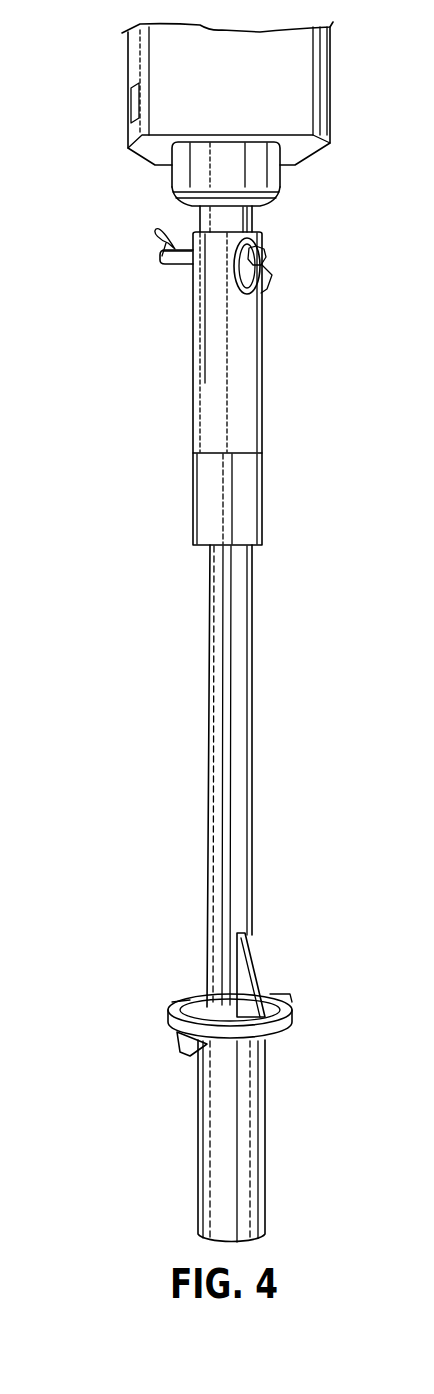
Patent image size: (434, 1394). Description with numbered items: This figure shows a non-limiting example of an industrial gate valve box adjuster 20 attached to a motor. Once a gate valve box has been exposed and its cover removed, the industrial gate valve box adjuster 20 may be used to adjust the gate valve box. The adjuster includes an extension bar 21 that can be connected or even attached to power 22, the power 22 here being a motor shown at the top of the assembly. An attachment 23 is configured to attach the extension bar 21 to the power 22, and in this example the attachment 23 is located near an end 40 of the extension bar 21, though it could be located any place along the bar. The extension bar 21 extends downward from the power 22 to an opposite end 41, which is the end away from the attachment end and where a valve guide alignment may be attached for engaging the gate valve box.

The industrial gate valve box adjuster 20 is at (158, 678).
The extension bar 21 is at (237, 813).
The power 22 is at (172, 92).
The attachment 23 is at (158, 245).
The end of extension bar 40 is at (243, 562).
The opposite end of extension bar 41 is at (222, 993).